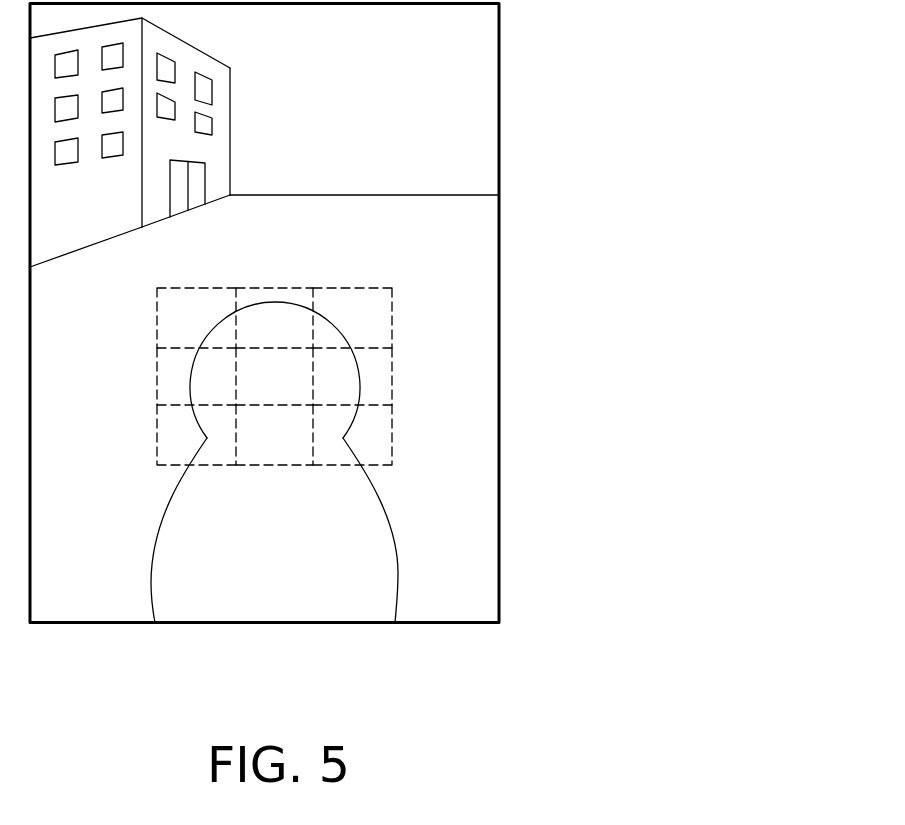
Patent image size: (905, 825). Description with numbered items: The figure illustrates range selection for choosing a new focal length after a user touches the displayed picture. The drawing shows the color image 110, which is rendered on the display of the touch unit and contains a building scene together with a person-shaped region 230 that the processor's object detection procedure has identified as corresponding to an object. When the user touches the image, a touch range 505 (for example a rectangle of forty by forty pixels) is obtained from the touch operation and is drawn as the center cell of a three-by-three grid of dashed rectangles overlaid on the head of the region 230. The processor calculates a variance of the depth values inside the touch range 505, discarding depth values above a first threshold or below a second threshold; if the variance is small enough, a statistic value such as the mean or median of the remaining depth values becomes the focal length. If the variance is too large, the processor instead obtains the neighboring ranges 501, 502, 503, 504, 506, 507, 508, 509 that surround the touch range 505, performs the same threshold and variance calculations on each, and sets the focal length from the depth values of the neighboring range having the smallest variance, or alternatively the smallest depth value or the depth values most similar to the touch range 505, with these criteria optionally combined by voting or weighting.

The color image 110 is at (500, 99).
The region 230 is at (395, 543).
The neighboring range 501 is at (192, 285).
The neighboring range 502 is at (274, 285).
The neighboring range 503 is at (355, 285).
The neighboring range 504 is at (157, 377).
The touch range 505 is at (313, 377).
The neighboring range 506 is at (392, 377).
The neighboring range 507 is at (157, 438).
The neighboring range 508 is at (313, 438).
The neighboring range 509 is at (392, 438).